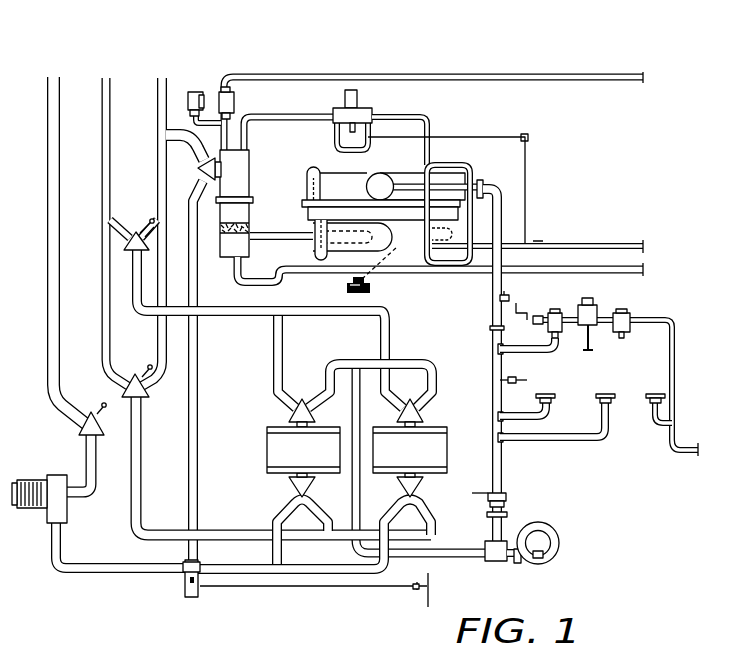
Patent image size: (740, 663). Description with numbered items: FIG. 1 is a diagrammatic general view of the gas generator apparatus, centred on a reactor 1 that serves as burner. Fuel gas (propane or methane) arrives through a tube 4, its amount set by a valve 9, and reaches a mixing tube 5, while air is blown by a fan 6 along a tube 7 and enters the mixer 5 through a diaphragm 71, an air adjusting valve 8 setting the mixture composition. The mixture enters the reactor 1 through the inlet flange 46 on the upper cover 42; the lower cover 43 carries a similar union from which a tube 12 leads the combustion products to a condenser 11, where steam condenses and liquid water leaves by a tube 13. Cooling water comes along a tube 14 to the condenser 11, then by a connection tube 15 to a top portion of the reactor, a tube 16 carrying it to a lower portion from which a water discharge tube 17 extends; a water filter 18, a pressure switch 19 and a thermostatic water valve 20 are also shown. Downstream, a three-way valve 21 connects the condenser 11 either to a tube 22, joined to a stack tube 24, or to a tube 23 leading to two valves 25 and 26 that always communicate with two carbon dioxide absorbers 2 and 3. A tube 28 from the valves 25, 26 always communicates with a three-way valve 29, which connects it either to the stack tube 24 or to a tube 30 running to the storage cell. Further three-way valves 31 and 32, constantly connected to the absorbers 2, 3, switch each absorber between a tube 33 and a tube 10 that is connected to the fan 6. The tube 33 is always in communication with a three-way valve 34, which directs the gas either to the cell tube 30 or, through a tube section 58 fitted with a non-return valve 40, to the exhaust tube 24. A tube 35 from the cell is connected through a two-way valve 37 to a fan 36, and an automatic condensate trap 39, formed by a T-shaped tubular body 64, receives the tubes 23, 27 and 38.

The reactor 1 is at (405, 175).
The absorber 2 is at (262, 445).
The absorber 3 is at (450, 447).
The tube 4 is at (645, 317).
The mixing tube 5 is at (497, 281).
The fan 6 is at (563, 545).
The tube 7 is at (498, 458).
The air adjusting valve 8 is at (506, 498).
The valve 9 is at (562, 313).
The tube 10 is at (465, 553).
The condenser 11 is at (252, 213).
The tube 12 is at (278, 233).
The tube 13 is at (236, 273).
The tube 14 is at (493, 77).
The connection tube 15 is at (262, 117).
The tube 16 is at (437, 165).
The water discharge tube 17 is at (565, 245).
The water filter 18 is at (223, 100).
The pressure switch 19 is at (193, 107).
The thermostatic water valve 20 is at (358, 108).
The three-way valve 21 is at (195, 175).
The tube 22 is at (193, 143).
The tube 23 is at (193, 272).
The tube 24 is at (163, 97).
The valve 25 is at (288, 482).
The valve 26 is at (427, 482).
The tube 27 is at (252, 570).
The tube 28 is at (135, 445).
The three-way valve 29 is at (153, 393).
The tube 30 is at (107, 103).
The three-way valve 31 is at (305, 397).
The three-way valve 32 is at (413, 398).
The tube 33 is at (252, 313).
The three-way valve 34 is at (127, 257).
The tube 35 is at (50, 103).
The fan 36 is at (68, 512).
The two-way valve 37 is at (82, 438).
The tube 38 is at (123, 568).
The automatic condensate trap 39 is at (182, 585).
The non-return valve 40 is at (154, 228).
The upper cover 42 is at (333, 185).
The lower cover 43 is at (410, 233).
The inlet flange 46 is at (372, 182).
The tube section 58 is at (147, 257).
The T-shaped tubular body 64 is at (185, 568).
The diaphragm 71 is at (492, 330).